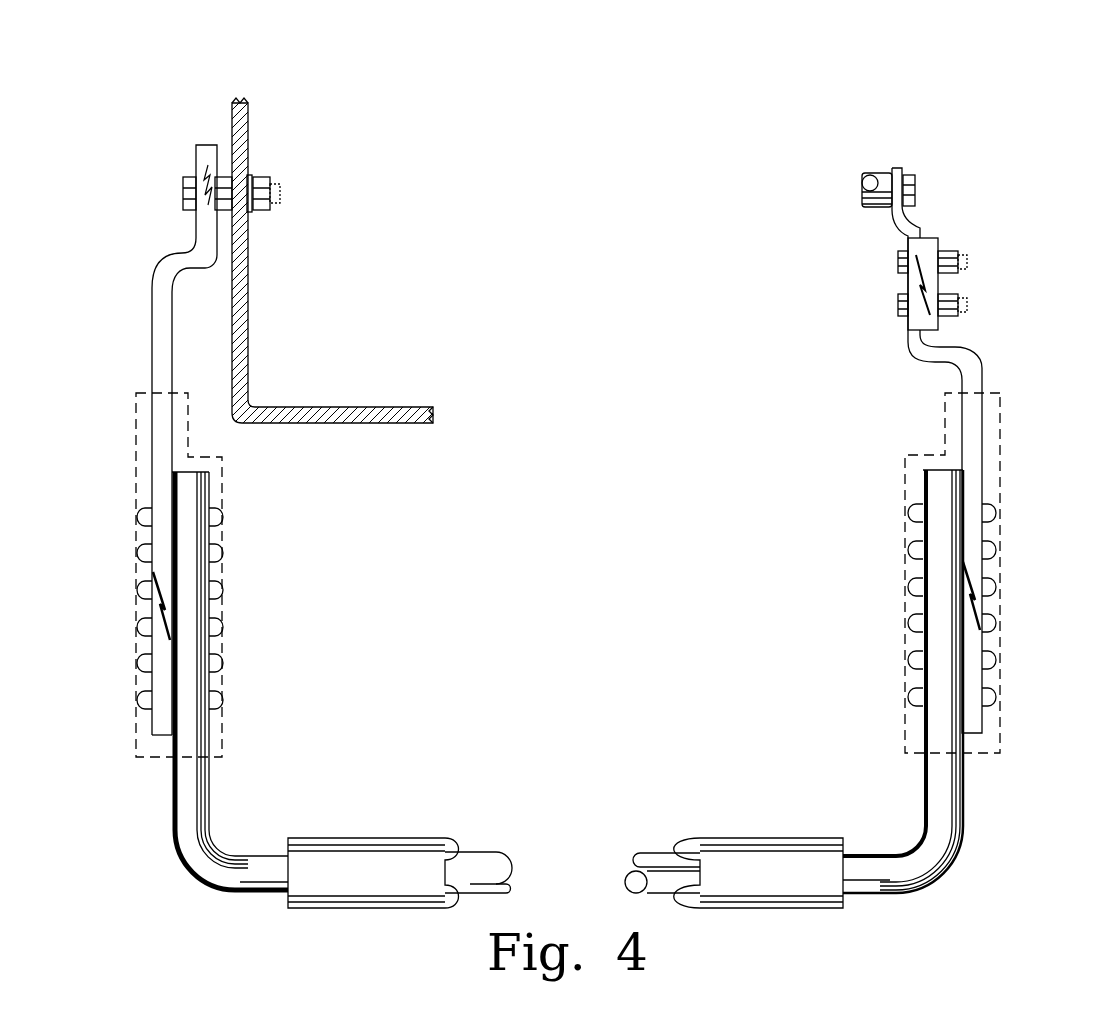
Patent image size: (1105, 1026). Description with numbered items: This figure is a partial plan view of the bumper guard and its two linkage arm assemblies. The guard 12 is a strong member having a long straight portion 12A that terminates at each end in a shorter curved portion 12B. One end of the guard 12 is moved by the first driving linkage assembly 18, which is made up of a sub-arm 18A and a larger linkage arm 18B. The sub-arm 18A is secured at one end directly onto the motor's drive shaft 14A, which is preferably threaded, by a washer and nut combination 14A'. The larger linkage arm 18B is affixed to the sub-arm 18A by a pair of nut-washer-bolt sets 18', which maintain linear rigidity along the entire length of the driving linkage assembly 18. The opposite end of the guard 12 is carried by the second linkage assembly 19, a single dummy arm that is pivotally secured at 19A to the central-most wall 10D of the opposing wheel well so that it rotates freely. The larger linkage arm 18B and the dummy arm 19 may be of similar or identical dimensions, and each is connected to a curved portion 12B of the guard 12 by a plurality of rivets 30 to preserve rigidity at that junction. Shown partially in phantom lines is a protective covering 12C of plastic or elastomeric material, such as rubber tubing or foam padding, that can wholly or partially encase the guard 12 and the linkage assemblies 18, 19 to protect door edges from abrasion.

The central-most wall 10D is at (238, 296).
The second linkage assembly 19 is at (132, 310).
The pivot 19A is at (257, 165).
The guard 12 is at (966, 906).
The long straight portion 12A is at (495, 840).
The curved portion 12B is at (226, 800).
The protective covering 12C is at (222, 458).
The rivets 30 is at (216, 663).
The first driving linkage assembly 18 is at (1027, 464).
The sub-arm 18A is at (878, 222).
The larger linkage arm 18B is at (920, 368).
The nut-washer-bolt sets 18' is at (907, 284).
The drive shaft 14A is at (867, 158).
The washer and nut combination 14A' is at (947, 177).